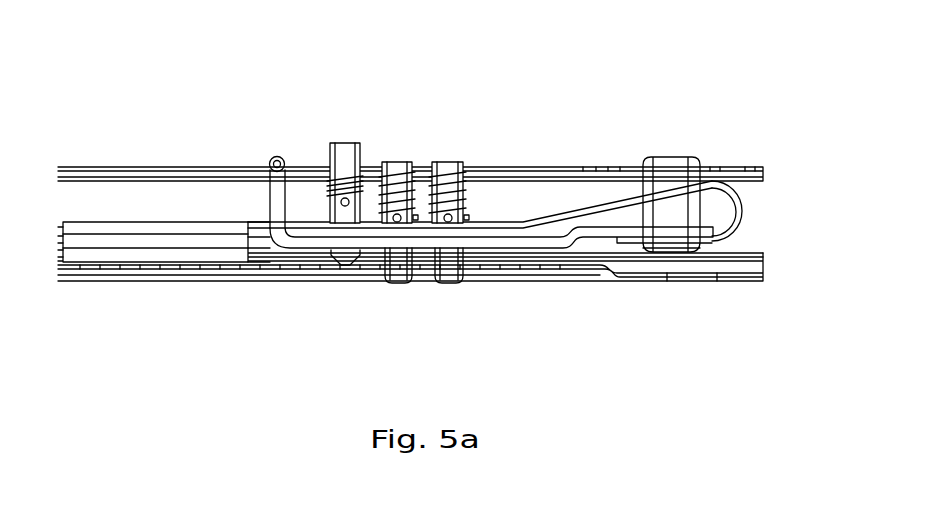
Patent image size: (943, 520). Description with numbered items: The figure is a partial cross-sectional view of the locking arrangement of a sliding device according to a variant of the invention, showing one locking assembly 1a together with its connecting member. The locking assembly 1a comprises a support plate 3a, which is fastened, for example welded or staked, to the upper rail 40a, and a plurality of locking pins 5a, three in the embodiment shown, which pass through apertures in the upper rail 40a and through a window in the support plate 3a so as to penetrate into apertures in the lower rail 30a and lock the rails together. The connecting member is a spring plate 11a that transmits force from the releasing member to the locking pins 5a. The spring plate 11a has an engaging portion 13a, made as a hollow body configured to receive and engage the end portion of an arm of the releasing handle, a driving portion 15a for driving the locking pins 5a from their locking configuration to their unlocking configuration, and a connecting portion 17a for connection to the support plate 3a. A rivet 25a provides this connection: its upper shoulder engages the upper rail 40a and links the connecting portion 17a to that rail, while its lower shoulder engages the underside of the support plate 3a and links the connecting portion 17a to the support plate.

The locking assembly 1a is at (530, 130).
The support plate 3a is at (530, 250).
The locking pins 5a is at (445, 162).
The connecting member (spring plate) 11a is at (268, 233).
The engaging portion 13a is at (177, 238).
The driving portion 15a is at (517, 222).
The connecting portion 17a is at (745, 207).
The rivet 25a is at (692, 203).
The lower rail 30a is at (137, 281).
The upper rail 40a is at (137, 167).